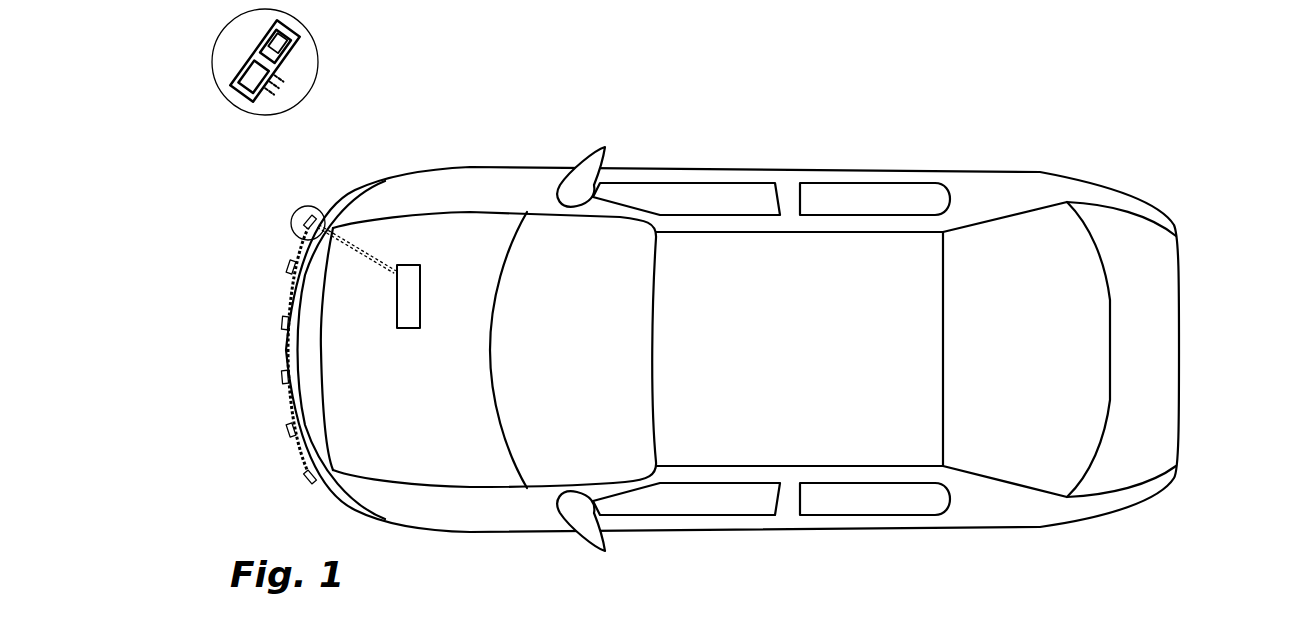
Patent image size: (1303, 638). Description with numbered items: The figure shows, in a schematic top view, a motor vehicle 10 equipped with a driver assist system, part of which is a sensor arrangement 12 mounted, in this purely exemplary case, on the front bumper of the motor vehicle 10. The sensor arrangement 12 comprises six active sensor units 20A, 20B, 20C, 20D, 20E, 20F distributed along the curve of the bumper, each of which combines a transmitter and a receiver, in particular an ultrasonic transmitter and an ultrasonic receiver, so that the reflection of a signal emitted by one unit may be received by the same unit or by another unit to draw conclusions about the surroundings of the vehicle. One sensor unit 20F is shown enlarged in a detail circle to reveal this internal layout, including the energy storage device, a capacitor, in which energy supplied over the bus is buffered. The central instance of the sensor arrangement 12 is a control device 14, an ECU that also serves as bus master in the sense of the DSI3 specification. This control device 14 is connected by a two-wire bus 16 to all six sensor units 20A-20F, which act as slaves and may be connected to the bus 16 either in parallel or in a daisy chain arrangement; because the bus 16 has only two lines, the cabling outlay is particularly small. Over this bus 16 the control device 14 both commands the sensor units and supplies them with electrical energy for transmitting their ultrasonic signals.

The motor vehicle 10 is at (1182, 229).
The sensor arrangement 12 is at (357, 351).
The control device 14 is at (405, 297).
The two-wire bus 16 is at (364, 226).
The sensor unit 20A is at (305, 473).
The sensor unit 20B is at (287, 430).
The sensor unit 20C is at (281, 377).
The sensor unit 20D is at (281, 323).
The sensor unit 20E is at (287, 267).
The sensor unit 20F is at (305, 218).